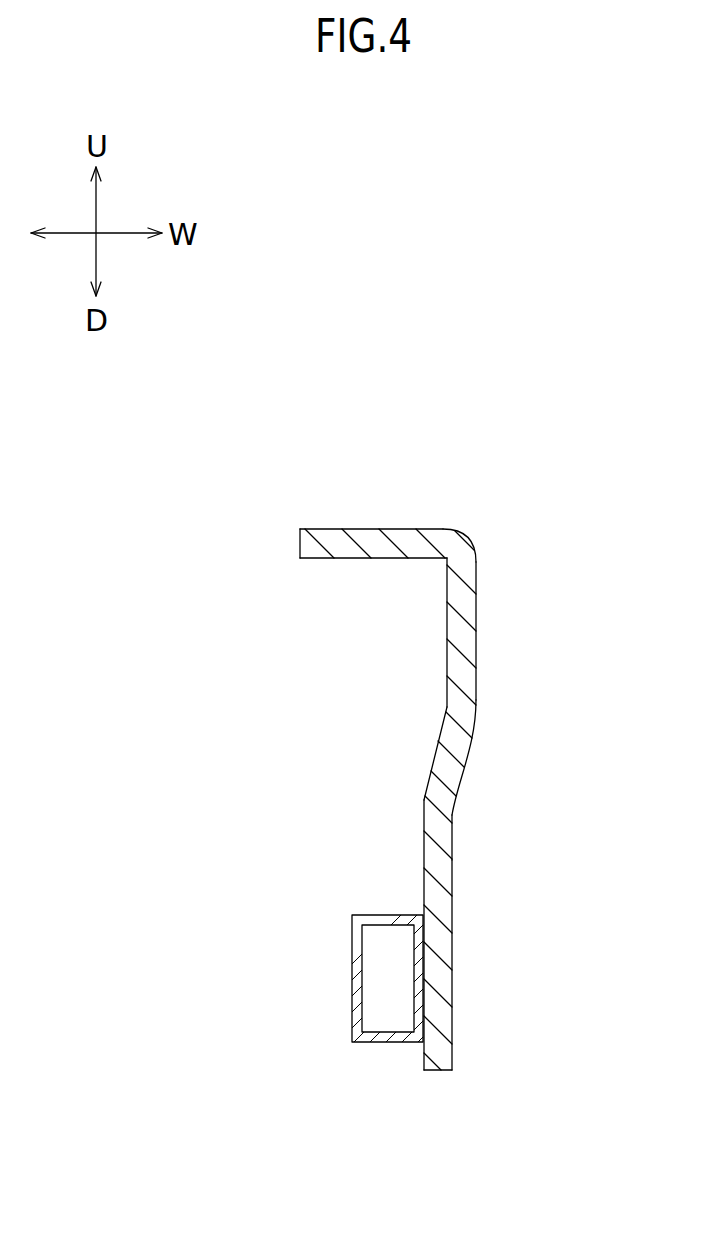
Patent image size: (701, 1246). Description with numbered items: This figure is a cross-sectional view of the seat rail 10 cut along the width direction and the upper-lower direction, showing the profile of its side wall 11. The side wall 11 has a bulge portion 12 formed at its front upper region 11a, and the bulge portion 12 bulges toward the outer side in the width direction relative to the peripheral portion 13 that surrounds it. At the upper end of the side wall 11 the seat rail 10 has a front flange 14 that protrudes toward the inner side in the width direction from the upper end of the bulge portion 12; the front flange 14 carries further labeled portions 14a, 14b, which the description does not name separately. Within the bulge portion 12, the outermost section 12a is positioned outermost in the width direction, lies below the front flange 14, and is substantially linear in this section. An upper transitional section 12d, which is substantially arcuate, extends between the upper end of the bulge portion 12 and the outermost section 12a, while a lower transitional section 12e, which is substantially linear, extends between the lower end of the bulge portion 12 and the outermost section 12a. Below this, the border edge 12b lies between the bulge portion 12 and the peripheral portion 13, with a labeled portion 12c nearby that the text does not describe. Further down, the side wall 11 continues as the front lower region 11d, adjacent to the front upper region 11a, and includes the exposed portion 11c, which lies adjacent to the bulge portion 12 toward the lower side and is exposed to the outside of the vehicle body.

The seat rail 10 is at (441, 526).
The side wall 11 is at (453, 870).
The front upper region 11a is at (477, 633).
The exposed portion 11c is at (453, 978).
The front lower region 11d is at (453, 1010).
The bulge portion 12 is at (477, 603).
The outermost section 12a is at (477, 645).
The border edge 12b is at (452, 815).
The bent corner portion 12c is at (452, 816).
The upper transitional section 12d is at (476, 548).
The lower transitional section 12e is at (467, 769).
The peripheral portion 13 is at (453, 898).
The front flange 14 is at (363, 546).
The upper surface of flange 14a is at (355, 529).
The lower surface of flange 14b is at (388, 529).